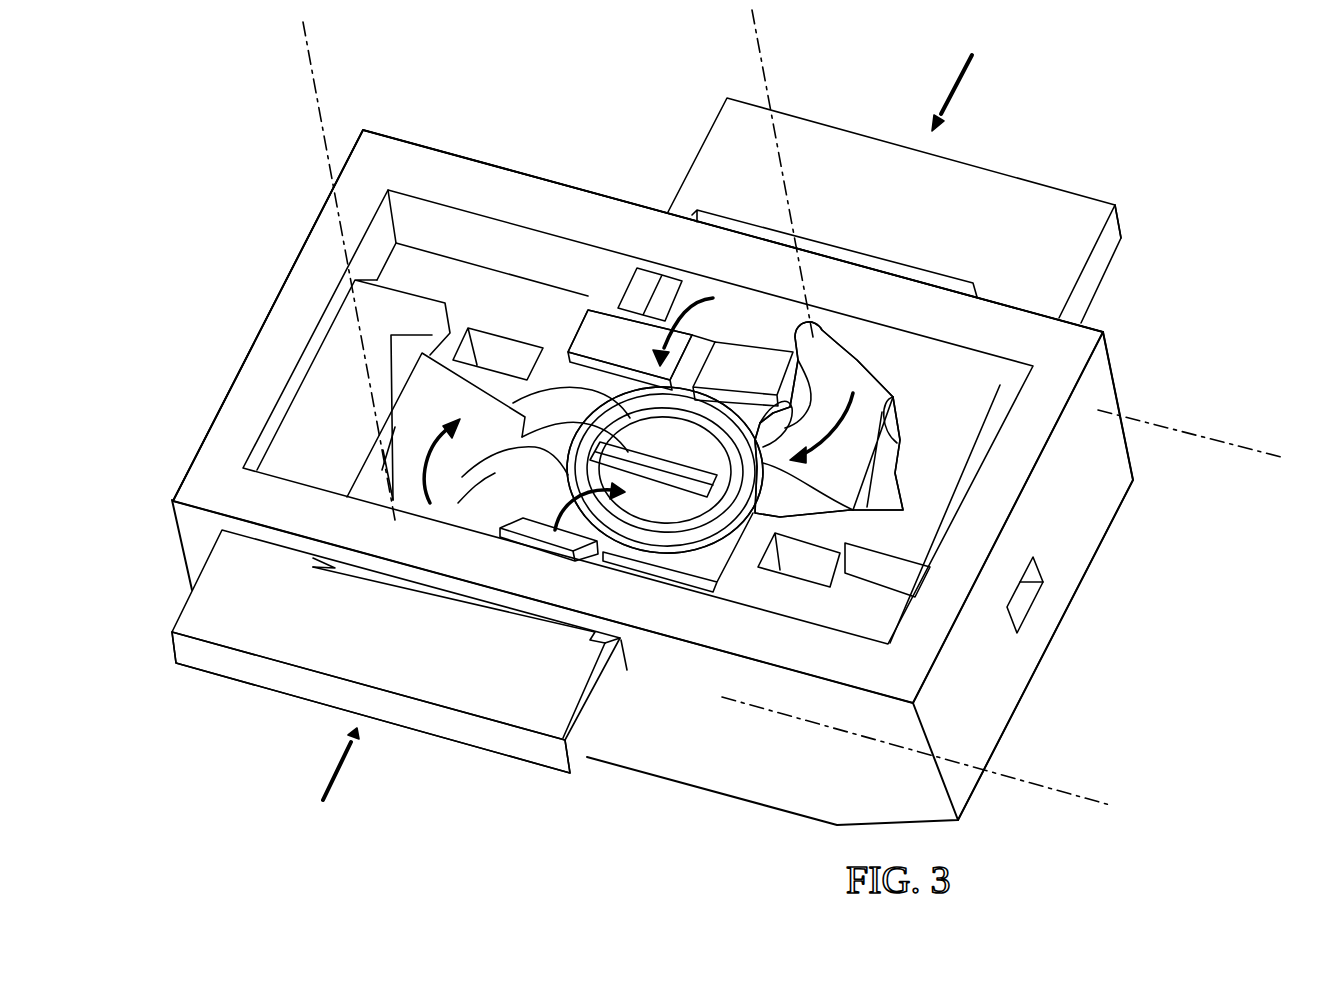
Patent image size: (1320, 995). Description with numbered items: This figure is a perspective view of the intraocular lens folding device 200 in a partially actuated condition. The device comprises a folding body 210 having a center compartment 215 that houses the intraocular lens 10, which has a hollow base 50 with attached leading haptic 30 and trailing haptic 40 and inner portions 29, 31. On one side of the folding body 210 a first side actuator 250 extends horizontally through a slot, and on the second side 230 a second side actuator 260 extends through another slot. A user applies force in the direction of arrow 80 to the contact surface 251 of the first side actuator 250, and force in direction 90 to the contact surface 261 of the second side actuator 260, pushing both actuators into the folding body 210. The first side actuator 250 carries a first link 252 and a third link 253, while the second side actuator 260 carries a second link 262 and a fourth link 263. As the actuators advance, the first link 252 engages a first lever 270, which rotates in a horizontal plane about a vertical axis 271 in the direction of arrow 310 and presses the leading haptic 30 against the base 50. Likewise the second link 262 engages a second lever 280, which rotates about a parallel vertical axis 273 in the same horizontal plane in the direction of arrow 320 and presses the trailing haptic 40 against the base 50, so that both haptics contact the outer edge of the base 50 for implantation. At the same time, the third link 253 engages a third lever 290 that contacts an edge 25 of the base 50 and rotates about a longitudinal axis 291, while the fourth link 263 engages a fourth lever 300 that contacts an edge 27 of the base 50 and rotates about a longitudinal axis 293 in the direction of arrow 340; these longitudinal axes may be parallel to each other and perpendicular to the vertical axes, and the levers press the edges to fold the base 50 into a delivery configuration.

The intraocular lens folding device 200 is at (164, 150).
The folding body 210 is at (278, 306).
The center compartment 215 is at (427, 196).
The second side 230 is at (551, 178).
The first side actuator 250 is at (293, 703).
The contact surface 251 is at (500, 750).
The first link 252 is at (268, 416).
The third link 253 is at (622, 642).
The second side actuator 260 is at (1030, 176).
The contact surface 261 is at (1120, 220).
The second link 262 is at (968, 448).
The fourth link 263 is at (620, 284).
The first lever 270 is at (400, 402).
The vertical axis 271 is at (311, 54).
The vertical axis 273 is at (762, 42).
The second lever 280 is at (818, 342).
The third lever 290 is at (736, 592).
The longitudinal axis 291 is at (1088, 800).
The longitudinal axis 293 is at (1264, 456).
The fourth lever 300 is at (565, 330).
The arrow 310 is at (400, 452).
The arrow 320 is at (903, 416).
The arrow 340 is at (695, 292).
The intraocular lens 10 is at (636, 545).
The base 50 is at (664, 469).
The edge 25 is at (546, 545).
The edge 27 is at (626, 385).
The inner portion 29 is at (522, 413).
The leading haptic 30 is at (450, 514).
The inner portion 31 is at (776, 492).
The trailing haptic 40 is at (773, 400).
The arrow 80 is at (350, 769).
The direction 90 is at (941, 85).